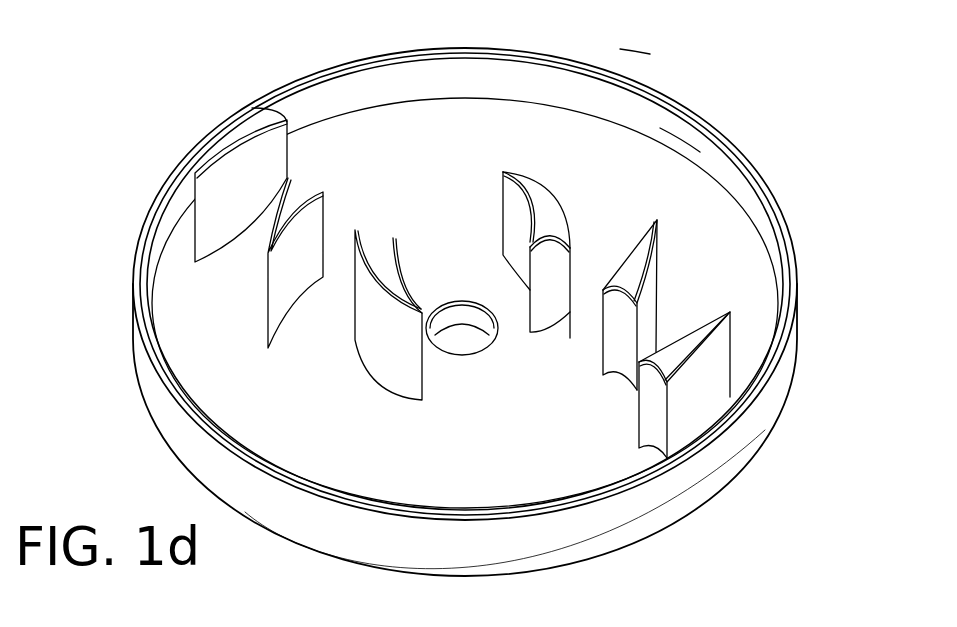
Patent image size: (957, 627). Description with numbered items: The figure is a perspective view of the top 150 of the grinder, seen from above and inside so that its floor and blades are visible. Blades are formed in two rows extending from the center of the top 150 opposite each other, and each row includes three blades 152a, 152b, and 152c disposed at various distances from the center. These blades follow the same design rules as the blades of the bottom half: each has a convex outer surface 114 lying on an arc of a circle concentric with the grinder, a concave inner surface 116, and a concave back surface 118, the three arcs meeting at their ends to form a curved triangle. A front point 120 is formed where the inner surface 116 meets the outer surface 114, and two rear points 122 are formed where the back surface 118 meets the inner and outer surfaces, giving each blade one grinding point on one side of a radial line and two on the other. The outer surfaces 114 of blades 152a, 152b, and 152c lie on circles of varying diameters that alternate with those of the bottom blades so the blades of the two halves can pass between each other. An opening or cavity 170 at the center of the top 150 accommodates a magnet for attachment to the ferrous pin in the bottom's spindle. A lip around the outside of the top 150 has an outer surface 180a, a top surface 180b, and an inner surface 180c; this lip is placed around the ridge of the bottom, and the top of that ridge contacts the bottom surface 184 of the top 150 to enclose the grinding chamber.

The outer surface 114 is at (648, 308).
The inner surface 116 is at (513, 204).
The back surface 118 is at (623, 370).
The front point 120 is at (503, 237).
The rear points 122 is at (536, 300).
The top 150 is at (810, 100).
The blade 152a is at (375, 248).
The blade 152b is at (298, 197).
The blade 152c is at (248, 120).
The opening or cavity 170 is at (468, 340).
The outer surface 180a is at (152, 409).
The top surface 180b is at (596, 70).
The inner surface 180c is at (680, 140).
The bottom surface 184 is at (449, 110).